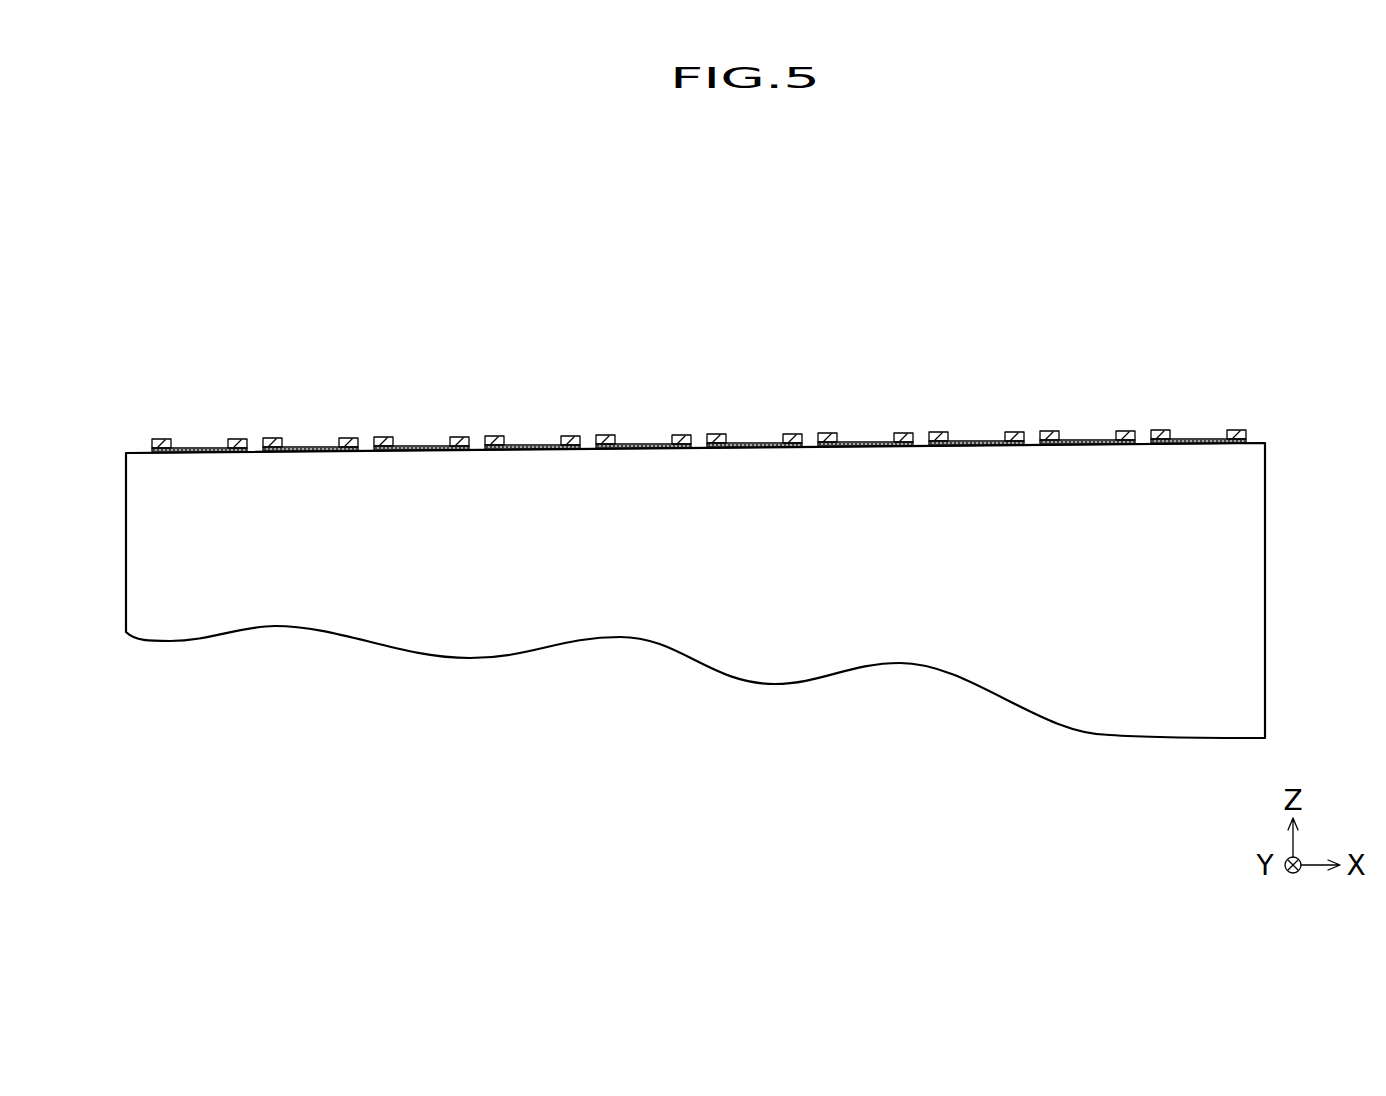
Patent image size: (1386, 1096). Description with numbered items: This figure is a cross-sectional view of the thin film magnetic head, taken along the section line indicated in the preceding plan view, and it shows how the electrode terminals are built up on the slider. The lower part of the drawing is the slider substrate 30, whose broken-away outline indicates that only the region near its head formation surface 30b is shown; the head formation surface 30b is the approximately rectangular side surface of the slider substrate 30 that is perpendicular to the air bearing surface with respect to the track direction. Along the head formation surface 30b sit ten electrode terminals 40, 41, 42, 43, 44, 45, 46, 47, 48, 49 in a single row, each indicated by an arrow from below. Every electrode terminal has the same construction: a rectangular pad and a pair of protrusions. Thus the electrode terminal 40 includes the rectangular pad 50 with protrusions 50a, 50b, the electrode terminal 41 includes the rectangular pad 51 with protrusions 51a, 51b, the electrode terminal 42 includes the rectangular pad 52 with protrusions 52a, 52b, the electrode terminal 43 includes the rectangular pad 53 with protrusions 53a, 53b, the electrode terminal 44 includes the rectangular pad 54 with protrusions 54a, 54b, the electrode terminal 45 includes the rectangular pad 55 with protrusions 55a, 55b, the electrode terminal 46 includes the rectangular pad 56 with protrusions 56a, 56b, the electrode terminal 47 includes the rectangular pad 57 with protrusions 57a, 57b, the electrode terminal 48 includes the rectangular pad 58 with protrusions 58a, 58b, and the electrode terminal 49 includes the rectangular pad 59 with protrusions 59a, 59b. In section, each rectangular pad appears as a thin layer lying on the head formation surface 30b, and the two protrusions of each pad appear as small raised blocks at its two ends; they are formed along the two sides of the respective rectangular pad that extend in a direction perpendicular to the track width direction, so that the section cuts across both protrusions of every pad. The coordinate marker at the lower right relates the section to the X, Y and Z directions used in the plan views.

The slider substrate 30 is at (1222, 615).
The head formation surface 30b is at (1260, 422).
The electrode terminal 40 is at (185, 475).
The electrode terminal 41 is at (300, 474).
The electrode terminal 42 is at (415, 473).
The electrode terminal 43 is at (535, 472).
The electrode terminal 44 is at (645, 471).
The electrode terminal 45 is at (757, 470).
The electrode terminal 46 is at (863, 469).
The electrode terminal 47 is at (975, 468).
The electrode terminal 48 is at (1083, 467).
The electrode terminal 49 is at (1197, 466).
The rectangular pad 50 is at (200, 451).
The protrusion 50a is at (157, 438).
The protrusion 50b is at (238, 438).
The rectangular pad 51 is at (312, 450).
The protrusion 51a is at (270, 437).
The protrusion 51b is at (350, 437).
The rectangular pad 52 is at (420, 449).
The protrusion 52a is at (382, 436).
The protrusion 52b is at (460, 436).
The rectangular pad 53 is at (535, 448).
The protrusion 53a is at (495, 435).
The protrusion 53b is at (572, 435).
The rectangular pad 54 is at (648, 447).
The protrusion 54a is at (603, 434).
The protrusion 54b is at (682, 434).
The rectangular pad 55 is at (757, 446).
The protrusion 55a is at (715, 433).
The protrusion 55b is at (795, 433).
The rectangular pad 56 is at (865, 445).
The protrusion 56a is at (828, 432).
The protrusion 56b is at (908, 432).
The rectangular pad 57 is at (982, 444).
The protrusion 57a is at (940, 431).
The protrusion 57b is at (1018, 431).
The rectangular pad 58 is at (1090, 443).
The protrusion 58a is at (1050, 430).
The protrusion 58b is at (1128, 430).
The rectangular pad 59 is at (1202, 442).
The protrusion 59a is at (1160, 429).
The protrusion 59b is at (1238, 429).